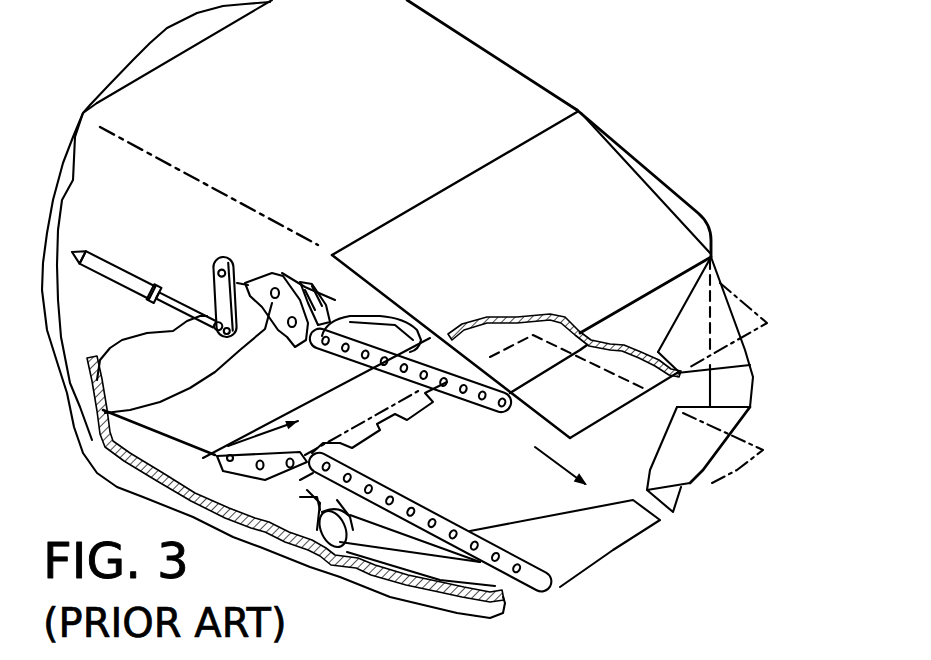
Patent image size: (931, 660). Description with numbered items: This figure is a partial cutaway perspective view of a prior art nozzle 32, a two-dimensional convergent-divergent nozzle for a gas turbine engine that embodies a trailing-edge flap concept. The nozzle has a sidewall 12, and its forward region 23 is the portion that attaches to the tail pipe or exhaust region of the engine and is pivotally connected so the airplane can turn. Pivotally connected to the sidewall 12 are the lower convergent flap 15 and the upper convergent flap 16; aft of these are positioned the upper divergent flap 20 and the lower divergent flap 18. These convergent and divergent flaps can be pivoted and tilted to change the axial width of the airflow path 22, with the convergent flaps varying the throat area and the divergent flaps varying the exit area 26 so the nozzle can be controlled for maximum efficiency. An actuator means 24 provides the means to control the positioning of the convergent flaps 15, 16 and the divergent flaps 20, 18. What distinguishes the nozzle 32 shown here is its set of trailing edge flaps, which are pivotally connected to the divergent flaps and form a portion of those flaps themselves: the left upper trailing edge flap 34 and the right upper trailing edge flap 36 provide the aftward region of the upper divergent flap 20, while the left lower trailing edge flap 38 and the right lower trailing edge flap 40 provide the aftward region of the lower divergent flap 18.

The sidewall 12 is at (653, 177).
The lower convergent flap 15 is at (235, 450).
The upper convergent flap 16 is at (278, 336).
The lower divergent flap 18 is at (447, 474).
The upper divergent flap 20 is at (518, 416).
The airflow path 22 is at (551, 466).
The forward region 23 is at (173, 34).
The actuator means 24 is at (113, 264).
The exit area 26 is at (753, 381).
The prior art nozzle 32 is at (578, 103).
The left upper trailing edge flap 34 is at (599, 414).
The right upper trailing edge flap 36 is at (718, 317).
The left lower trailing edge flap 38 is at (574, 548).
The right lower trailing edge flap 40 is at (758, 413).